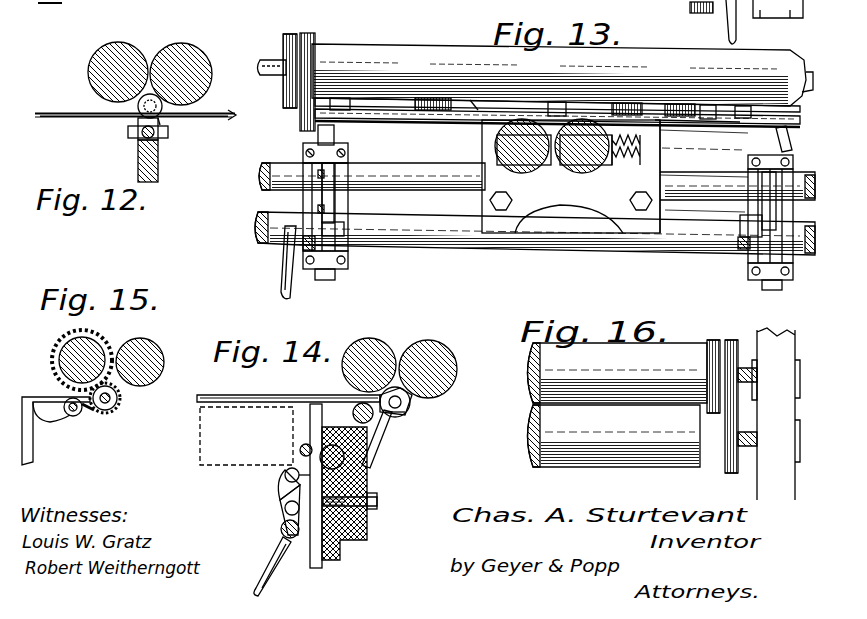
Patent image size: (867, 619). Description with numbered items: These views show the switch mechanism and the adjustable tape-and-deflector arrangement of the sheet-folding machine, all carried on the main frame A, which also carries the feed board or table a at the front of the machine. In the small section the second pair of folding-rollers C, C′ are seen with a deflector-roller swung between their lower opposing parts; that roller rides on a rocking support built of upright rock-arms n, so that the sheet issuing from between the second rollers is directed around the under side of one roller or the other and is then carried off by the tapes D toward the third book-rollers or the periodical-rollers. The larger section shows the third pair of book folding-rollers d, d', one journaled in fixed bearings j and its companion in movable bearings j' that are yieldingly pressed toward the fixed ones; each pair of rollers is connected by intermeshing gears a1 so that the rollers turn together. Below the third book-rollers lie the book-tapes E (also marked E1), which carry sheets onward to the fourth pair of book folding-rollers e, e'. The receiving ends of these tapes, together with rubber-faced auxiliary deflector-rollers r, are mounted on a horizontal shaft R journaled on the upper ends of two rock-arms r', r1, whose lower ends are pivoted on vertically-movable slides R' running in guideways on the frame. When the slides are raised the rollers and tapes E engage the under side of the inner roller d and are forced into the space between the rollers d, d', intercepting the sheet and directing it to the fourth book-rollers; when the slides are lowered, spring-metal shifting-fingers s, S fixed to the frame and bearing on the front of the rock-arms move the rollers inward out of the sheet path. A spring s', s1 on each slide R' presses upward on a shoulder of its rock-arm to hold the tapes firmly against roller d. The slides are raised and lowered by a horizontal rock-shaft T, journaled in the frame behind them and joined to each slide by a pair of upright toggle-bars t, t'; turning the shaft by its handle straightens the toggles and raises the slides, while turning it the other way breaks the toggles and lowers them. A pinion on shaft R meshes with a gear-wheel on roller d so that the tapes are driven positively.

In FIG. 12, the second folding-roller C is at (180, 45).
In FIG. 12, the second folding-roller C′ is at (110, 55).
In FIG. 12, the tapes D is at (55, 112).
In FIG. 12, the upright rock-arm n is at (128, 130).
In FIG. 15, the feed board a is at (52, 352).
In FIG. 13, the intermeshing gears a1 is at (268, 60).
In FIG. 13, the third book folding-roller d is at (562, 75).
In FIG. 14, the third book folding-roller d is at (369, 353).
In FIG. 16, the third book folding-roller d is at (618, 373).
In FIG. 14, the third book folding-roller d' is at (428, 357).
In FIG. 15, the third book folding-roller d' is at (147, 356).
In FIG. 16, the third book folding-roller d' is at (657, 417).
In FIG. 13, the book-tapes E is at (428, 100).
In FIG. 14, the book-tapes E is at (232, 395).
In FIG. 13, the bar E1 is at (622, 103).
In FIG. 13, the auxiliary deflector roller r is at (649, 87).
In FIG. 13, the rock-arm r1 is at (352, 98).
In FIG. 14, the rock-arm r' is at (402, 434).
In FIG. 13, the deflector shaft R is at (705, 88).
In FIG. 14, the deflector shaft R is at (407, 413).
In FIG. 15, the deflector shaft R is at (119, 399).
In FIG. 13, the slide R' is at (554, 224).
In FIG. 14, the slide R' is at (344, 511).
In FIG. 15, the slide R' is at (56, 431).
In FIG. 13, the shifting-finger s is at (795, 118).
In FIG. 13, the spring s1 is at (326, 135).
In FIG. 15, the spring s' is at (89, 424).
In FIG. 14, the shifting-finger S is at (370, 460).
In FIG. 13, the main frame A is at (528, 181).
In FIG. 14, the main frame A is at (322, 555).
In FIG. 16, the main frame A is at (795, 500).
In FIG. 13, the toggle rock-shaft T is at (548, 252).
In FIG. 14, the toggle rock-shaft T is at (281, 529).
In FIG. 13, the toggle-bar t is at (547, 196).
In FIG. 14, the toggle-bar t is at (282, 484).
In FIG. 13, the toggle-bar t' is at (542, 220).
In FIG. 14, the toggle-bar t' is at (276, 510).
In FIG. 13, the fourth book folding-roller e is at (522, 158).
In FIG. 13, the fourth book folding-roller e' is at (583, 158).
In FIG. 13, the fixed bearing j is at (555, 176).
In FIG. 13, the movable bearing j' is at (619, 167).